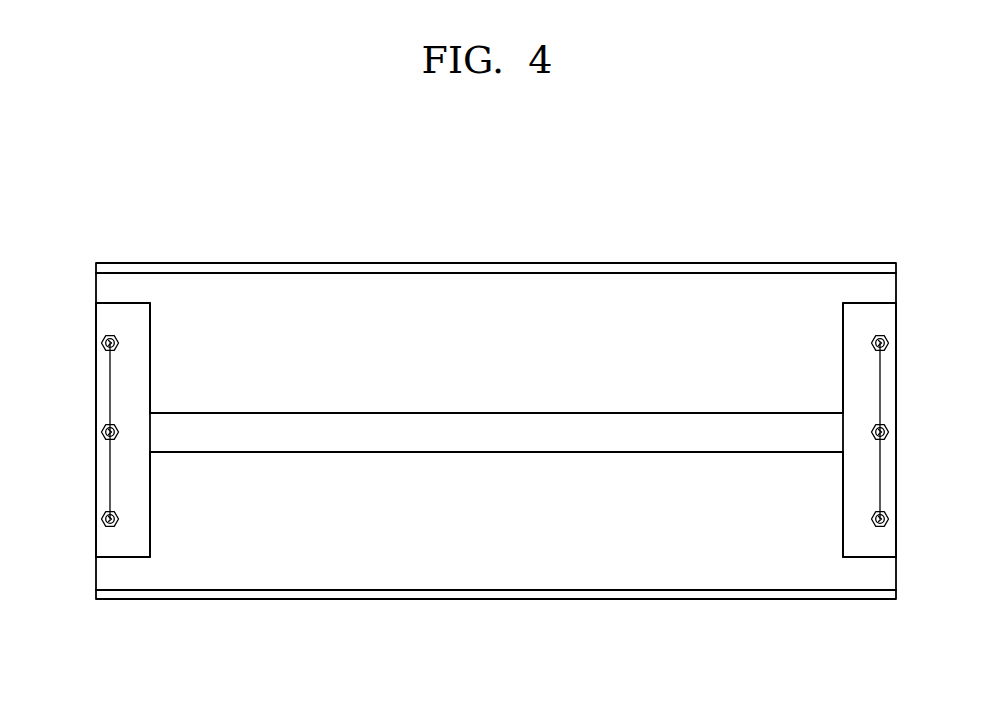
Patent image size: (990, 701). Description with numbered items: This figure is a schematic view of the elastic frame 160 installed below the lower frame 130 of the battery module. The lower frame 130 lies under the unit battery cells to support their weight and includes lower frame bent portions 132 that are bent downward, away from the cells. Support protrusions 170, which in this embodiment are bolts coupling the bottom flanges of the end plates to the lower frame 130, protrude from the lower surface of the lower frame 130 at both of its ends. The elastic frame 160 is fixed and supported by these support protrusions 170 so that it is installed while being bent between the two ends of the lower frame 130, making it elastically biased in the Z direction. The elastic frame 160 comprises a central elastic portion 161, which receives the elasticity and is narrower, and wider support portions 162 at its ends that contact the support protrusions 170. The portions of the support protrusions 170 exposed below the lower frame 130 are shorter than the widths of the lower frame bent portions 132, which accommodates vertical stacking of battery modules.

The lower frame 130 is at (490, 258).
The lower frame bent portions 132 is at (404, 270).
The elastic frame 160 is at (566, 402).
The elastic portion 161 is at (444, 440).
The support portions 162 is at (127, 545).
The support protrusions 170 is at (101, 343).